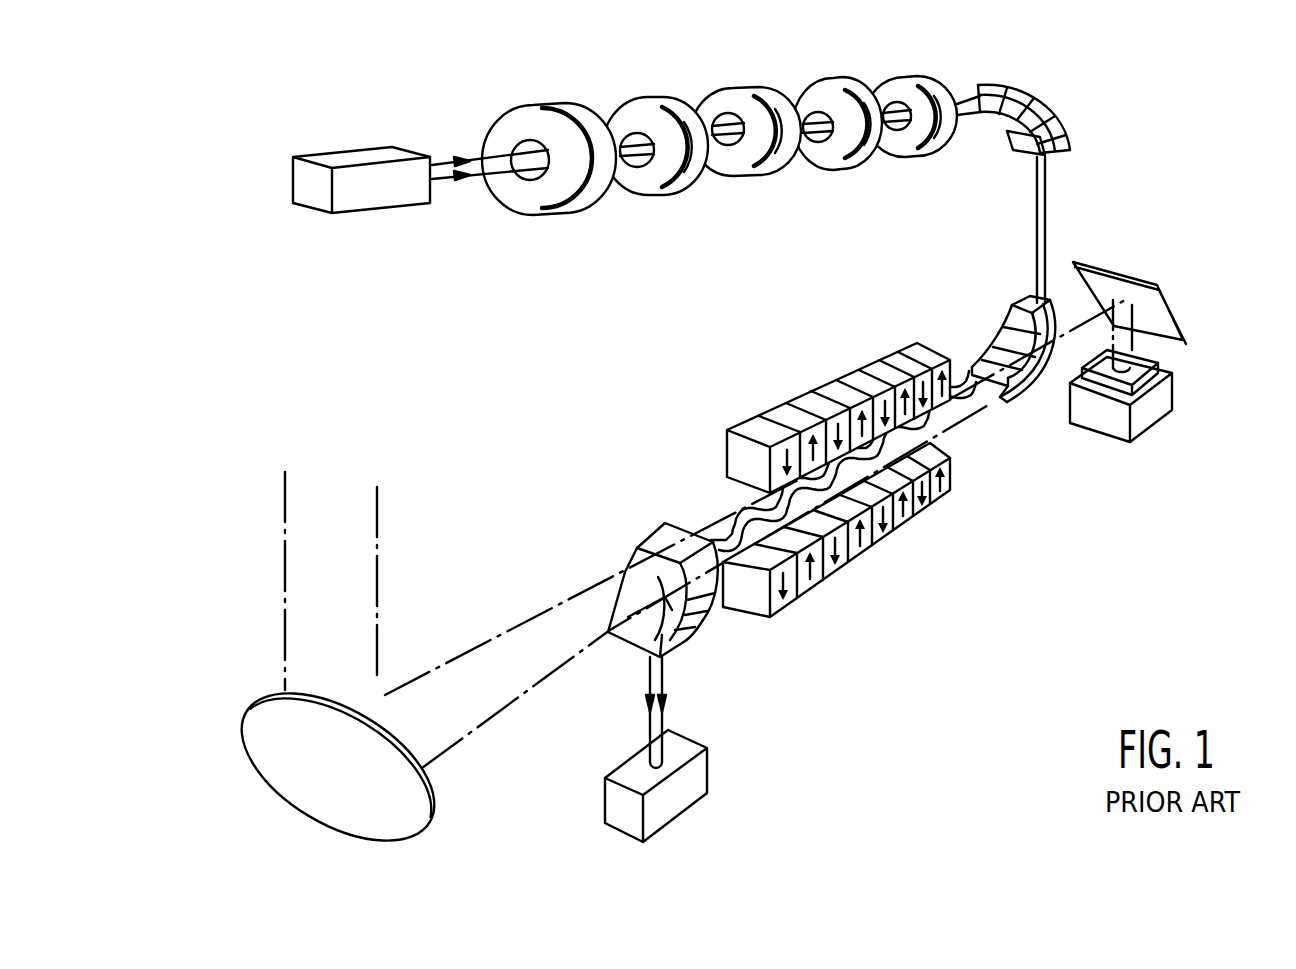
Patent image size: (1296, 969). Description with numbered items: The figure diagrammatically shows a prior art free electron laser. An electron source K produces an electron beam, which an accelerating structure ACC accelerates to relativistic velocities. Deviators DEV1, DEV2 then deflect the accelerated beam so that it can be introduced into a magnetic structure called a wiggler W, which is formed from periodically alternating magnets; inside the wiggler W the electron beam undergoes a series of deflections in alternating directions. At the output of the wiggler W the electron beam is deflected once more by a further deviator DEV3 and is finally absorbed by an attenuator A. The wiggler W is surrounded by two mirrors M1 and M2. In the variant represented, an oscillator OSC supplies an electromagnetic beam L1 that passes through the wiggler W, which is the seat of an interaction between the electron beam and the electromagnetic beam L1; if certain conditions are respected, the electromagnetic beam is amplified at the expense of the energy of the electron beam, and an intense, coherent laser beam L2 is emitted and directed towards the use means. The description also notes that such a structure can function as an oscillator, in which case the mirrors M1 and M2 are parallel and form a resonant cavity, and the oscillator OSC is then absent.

The electron source K is at (317, 196).
The accelerating structure ACC is at (655, 205).
The deviator DEV1 is at (1008, 136).
The deviator DEV2 is at (1000, 325).
The deviator DEV3 is at (662, 521).
The wiggler W is at (922, 525).
The mirror M1 is at (1147, 290).
The electromagnetic beam L1 is at (1134, 347).
The oscillator OSC is at (1147, 413).
The mirror M2 is at (290, 730).
The laser beam L2 is at (488, 640).
The attenuator A is at (693, 743).